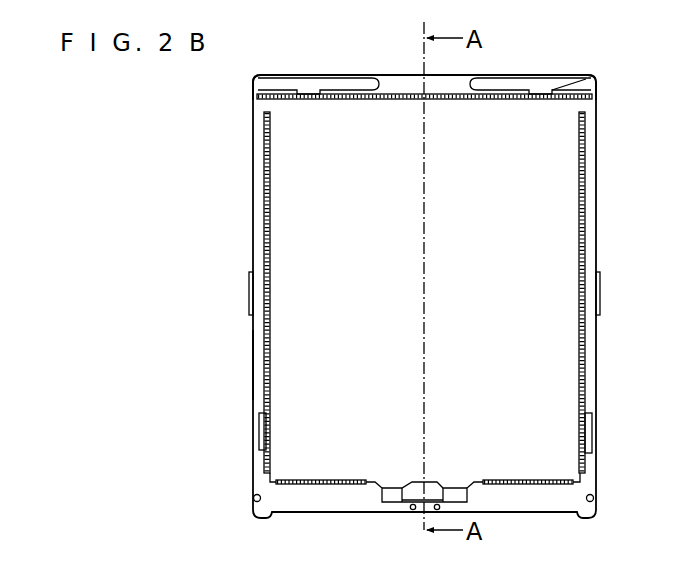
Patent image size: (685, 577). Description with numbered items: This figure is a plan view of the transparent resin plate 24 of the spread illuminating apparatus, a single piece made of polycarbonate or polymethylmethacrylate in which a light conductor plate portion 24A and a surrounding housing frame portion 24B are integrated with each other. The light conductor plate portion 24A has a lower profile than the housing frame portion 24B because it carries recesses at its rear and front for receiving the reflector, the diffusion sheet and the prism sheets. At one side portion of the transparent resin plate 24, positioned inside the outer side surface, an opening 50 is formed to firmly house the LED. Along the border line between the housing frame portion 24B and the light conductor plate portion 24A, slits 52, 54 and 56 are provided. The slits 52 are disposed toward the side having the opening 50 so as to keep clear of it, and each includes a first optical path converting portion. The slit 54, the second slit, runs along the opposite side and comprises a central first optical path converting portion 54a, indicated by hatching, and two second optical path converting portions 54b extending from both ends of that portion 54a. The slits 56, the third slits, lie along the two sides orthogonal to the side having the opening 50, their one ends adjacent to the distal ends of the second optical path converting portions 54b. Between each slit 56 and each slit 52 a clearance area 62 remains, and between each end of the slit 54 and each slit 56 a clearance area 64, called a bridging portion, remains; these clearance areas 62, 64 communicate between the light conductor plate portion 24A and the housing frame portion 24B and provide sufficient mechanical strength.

The transparent resin plate 24 is at (573, 75).
The light conductor plate portion 24A is at (364, 304).
The housing frame portion 24B is at (250, 394).
The opening 50 is at (414, 494).
The slits 52 is at (325, 480).
The slit 54 is at (395, 98).
The first optical path converting portion 54a is at (458, 96).
The second optical path converting portions 54b is at (272, 95).
The slits 56 is at (266, 234).
The clearance area 62 is at (275, 475).
The clearance area 64 is at (262, 103).